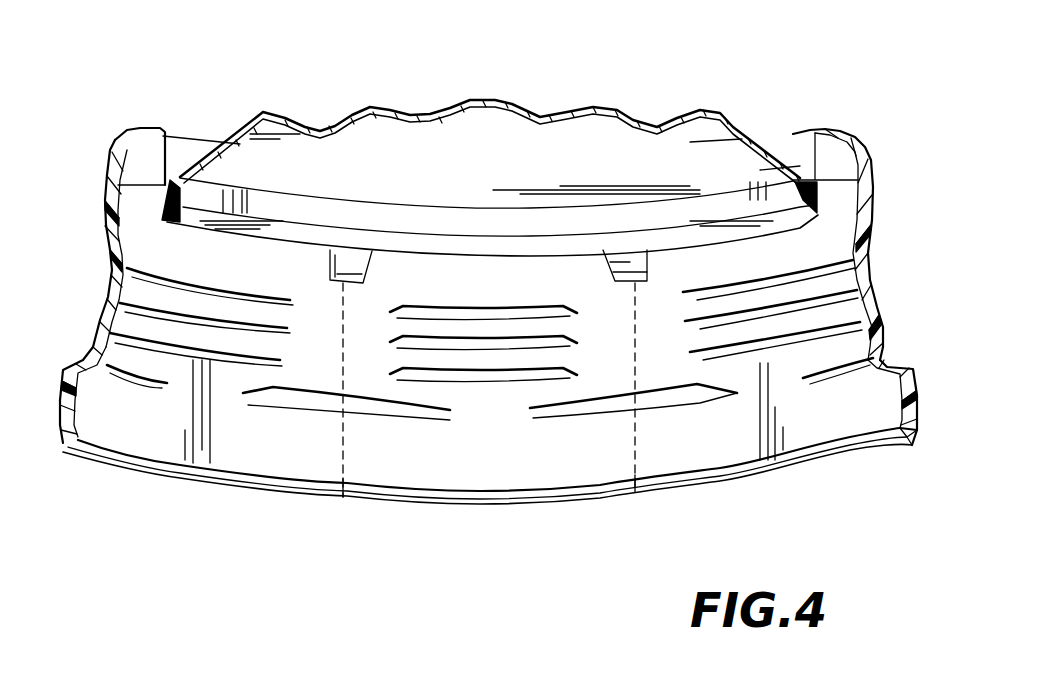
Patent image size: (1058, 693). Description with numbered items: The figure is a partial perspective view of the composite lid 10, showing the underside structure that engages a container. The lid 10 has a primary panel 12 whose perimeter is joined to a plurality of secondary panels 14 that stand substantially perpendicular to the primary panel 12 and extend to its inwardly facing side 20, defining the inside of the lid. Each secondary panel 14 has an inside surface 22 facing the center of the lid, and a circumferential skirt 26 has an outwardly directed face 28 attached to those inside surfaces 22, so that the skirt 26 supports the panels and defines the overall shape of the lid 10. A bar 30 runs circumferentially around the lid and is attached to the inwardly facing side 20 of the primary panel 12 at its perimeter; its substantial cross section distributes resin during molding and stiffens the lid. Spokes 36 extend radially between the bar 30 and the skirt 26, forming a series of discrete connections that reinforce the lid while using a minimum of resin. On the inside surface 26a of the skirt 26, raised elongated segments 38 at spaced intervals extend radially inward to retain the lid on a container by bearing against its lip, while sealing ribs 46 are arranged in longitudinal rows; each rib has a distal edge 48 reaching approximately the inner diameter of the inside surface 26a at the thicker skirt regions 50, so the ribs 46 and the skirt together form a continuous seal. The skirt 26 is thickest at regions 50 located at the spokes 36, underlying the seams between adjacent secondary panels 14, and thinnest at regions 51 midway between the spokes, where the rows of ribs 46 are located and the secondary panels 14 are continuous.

The lid 10 is at (736, 96).
The primary panel 12 is at (470, 100).
The inwardly facing side of the primary panel 20 is at (598, 131).
The bar 30 is at (347, 218).
The spokes 36 is at (364, 269).
The secondary panels 14 is at (867, 282).
The inside surface 22 is at (905, 398).
The skirt 26 is at (880, 362).
The inside surface of the skirt 26a is at (433, 443).
The outwardly directed face 28 is at (918, 407).
The sealing ribs 46 is at (763, 275).
The distal edge 48 is at (213, 357).
The raised elongated segments 38 is at (305, 407).
The thicker skirt regions 50 is at (328, 446).
The thinner skirt regions 51 is at (490, 453).